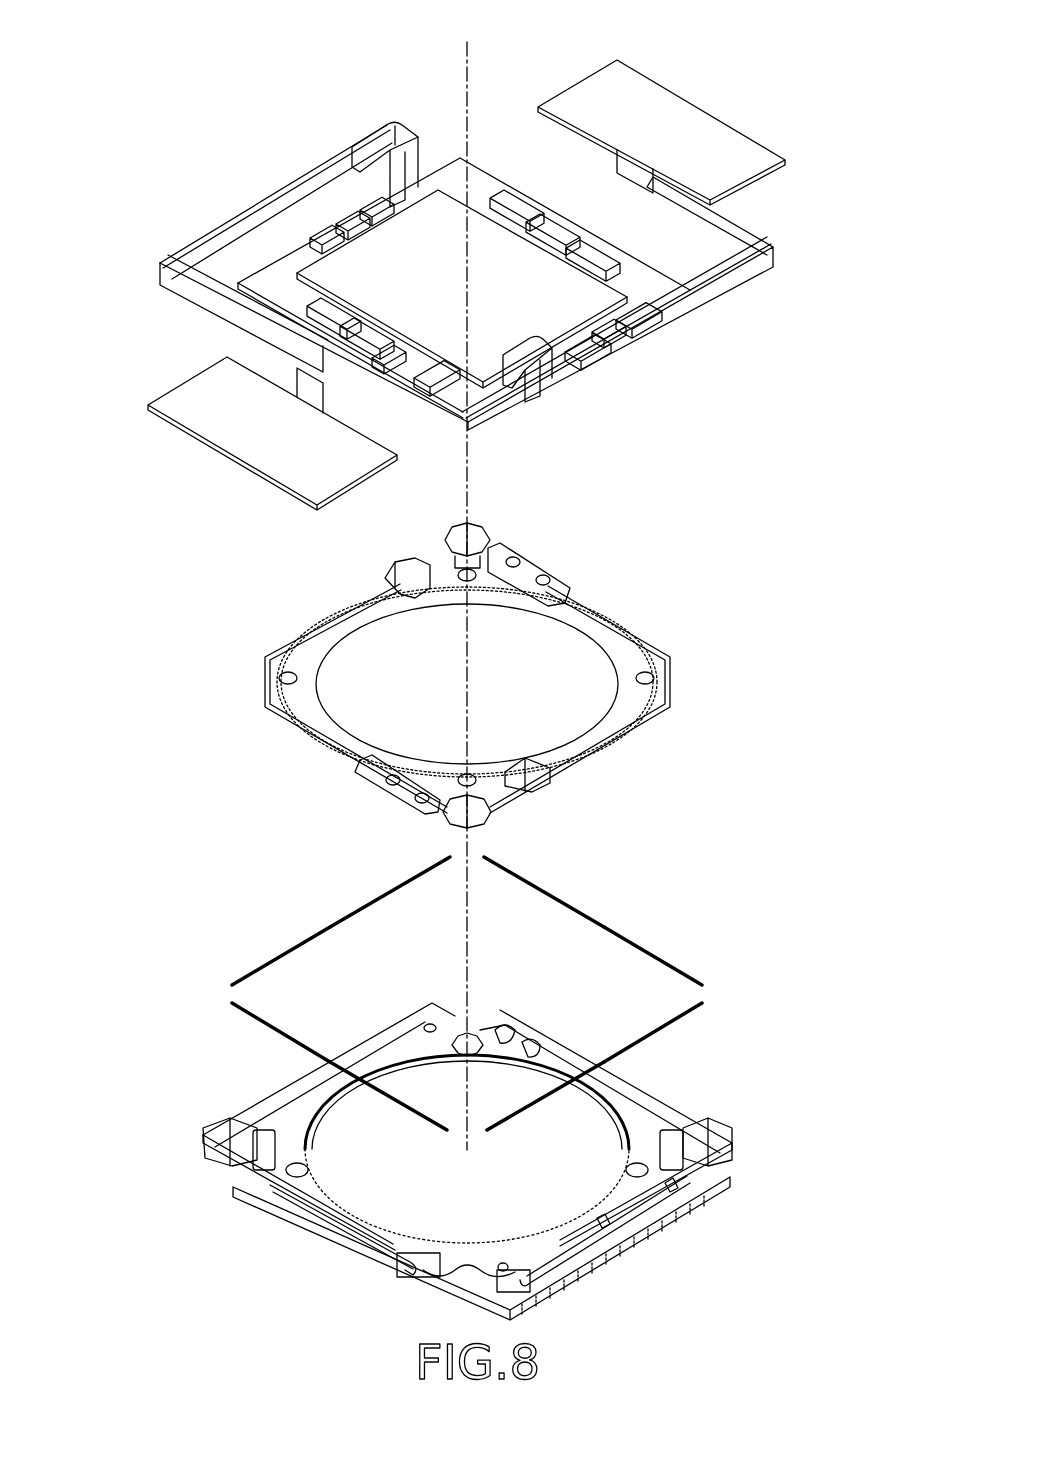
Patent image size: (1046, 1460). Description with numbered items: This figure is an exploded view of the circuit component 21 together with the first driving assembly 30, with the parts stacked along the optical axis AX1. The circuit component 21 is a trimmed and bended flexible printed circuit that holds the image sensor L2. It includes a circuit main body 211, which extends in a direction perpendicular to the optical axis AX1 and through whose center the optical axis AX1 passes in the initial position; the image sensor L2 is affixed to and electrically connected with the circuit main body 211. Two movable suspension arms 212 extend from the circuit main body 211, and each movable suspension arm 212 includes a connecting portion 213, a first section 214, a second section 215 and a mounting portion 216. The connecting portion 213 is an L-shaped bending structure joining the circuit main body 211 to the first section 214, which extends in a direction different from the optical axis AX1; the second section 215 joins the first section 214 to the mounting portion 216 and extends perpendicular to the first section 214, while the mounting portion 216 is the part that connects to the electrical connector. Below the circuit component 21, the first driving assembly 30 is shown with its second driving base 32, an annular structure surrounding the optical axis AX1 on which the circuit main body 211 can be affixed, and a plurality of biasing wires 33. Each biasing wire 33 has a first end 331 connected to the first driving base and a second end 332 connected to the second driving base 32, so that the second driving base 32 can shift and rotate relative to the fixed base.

The circuit component 21 is at (652, 46).
The circuit main body 211 is at (482, 186).
The movable suspension arm 212 is at (184, 240).
The connecting portion 213 is at (376, 125).
The first section 214 is at (280, 203).
The second section 215 is at (186, 300).
The mounting portion 216 is at (676, 122).
The first driving assembly 30 is at (657, 546).
The second driving base 32 is at (492, 572).
The biasing wire 33 is at (338, 915).
The first end 331 is at (250, 966).
The second end 332 is at (438, 857).
The optical axis AX1 is at (460, 584).
The image sensor L2 is at (445, 212).